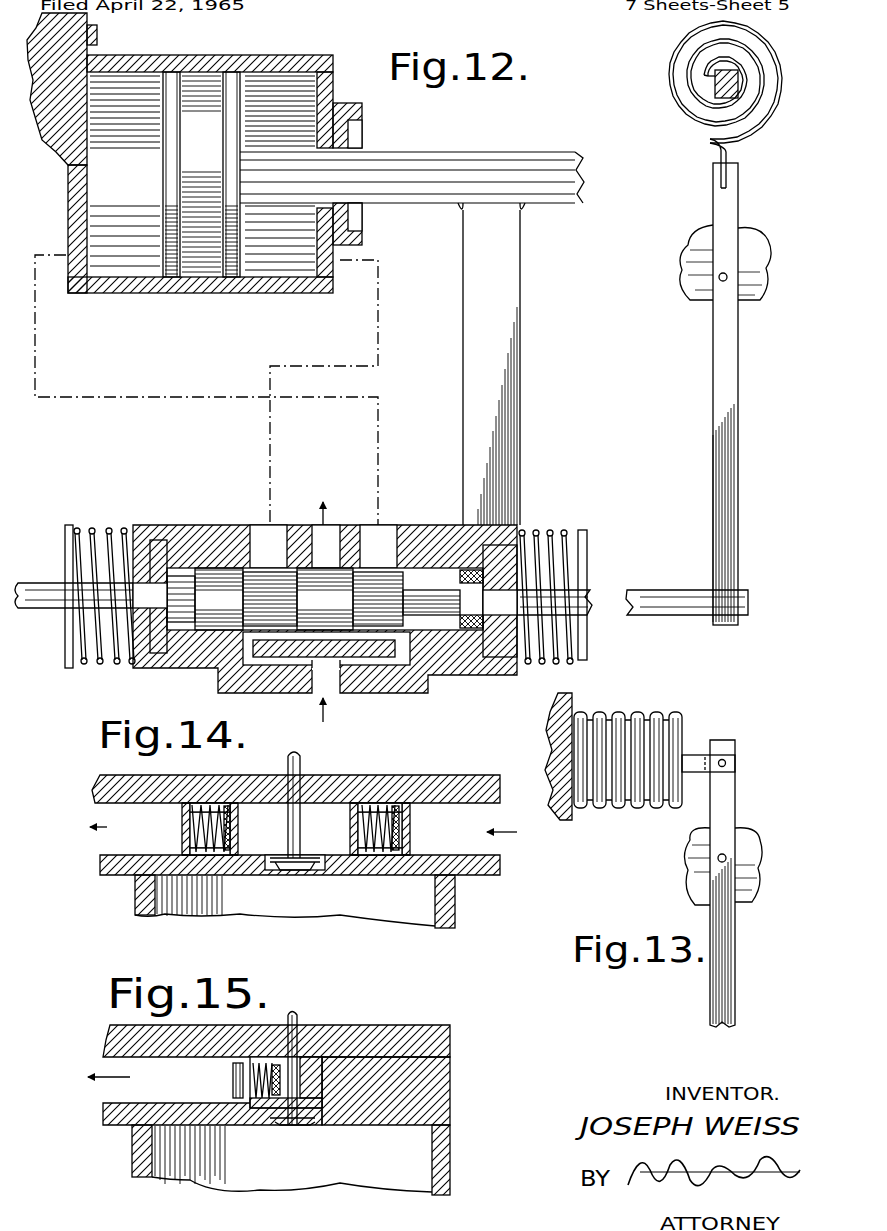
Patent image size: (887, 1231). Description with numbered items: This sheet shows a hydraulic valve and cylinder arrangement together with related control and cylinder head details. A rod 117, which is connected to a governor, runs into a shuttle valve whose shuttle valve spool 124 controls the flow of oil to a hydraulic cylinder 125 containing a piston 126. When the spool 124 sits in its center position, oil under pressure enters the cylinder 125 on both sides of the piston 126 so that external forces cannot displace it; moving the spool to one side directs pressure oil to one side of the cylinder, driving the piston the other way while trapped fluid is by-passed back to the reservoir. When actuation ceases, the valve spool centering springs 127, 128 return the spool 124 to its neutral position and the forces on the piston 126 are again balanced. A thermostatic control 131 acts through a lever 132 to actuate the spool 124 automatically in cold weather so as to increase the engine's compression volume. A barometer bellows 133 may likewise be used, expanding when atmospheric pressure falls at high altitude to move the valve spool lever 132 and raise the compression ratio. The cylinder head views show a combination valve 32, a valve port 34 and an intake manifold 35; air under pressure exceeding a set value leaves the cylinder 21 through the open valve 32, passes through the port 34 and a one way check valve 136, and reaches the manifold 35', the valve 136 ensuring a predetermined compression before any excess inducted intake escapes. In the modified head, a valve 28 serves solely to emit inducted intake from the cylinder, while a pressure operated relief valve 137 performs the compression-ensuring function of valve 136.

In FIG. 12, the hydraulic cylinder 125 is at (135, 58).
In FIG. 12, the piston 126 is at (200, 75).
In FIG. 12, the thermostatic control 131 is at (778, 52).
In FIG. 12, the lever 132 is at (738, 356).
In FIG. 13, the lever 132 is at (728, 803).
In FIG. 12, the rod 117 is at (36, 583).
In FIG. 12, the valve spool centering spring 127 is at (104, 530).
In FIG. 12, the valve spool centering spring 128 is at (548, 538).
In FIG. 12, the shuttle valve spool 124 is at (213, 618).
In FIG. 13, the barometer bellows 133 is at (645, 697).
In FIG. 14, the combination valve 32 is at (301, 762).
In FIG. 14, the manifold 35' is at (138, 829).
In FIG. 15, the manifold 35' is at (169, 1080).
In FIG. 14, the valve port 34 is at (294, 829).
In FIG. 14, the intake manifold 35 is at (455, 829).
In FIG. 14, the one way check valve 136 is at (222, 856).
In FIG. 14, the cylinder 21 is at (170, 898).
In FIG. 15, the cylinder 21 is at (165, 1153).
In FIG. 15, the valve 28 is at (299, 1018).
In FIG. 15, the pressure operated relief valve 137 is at (228, 1100).